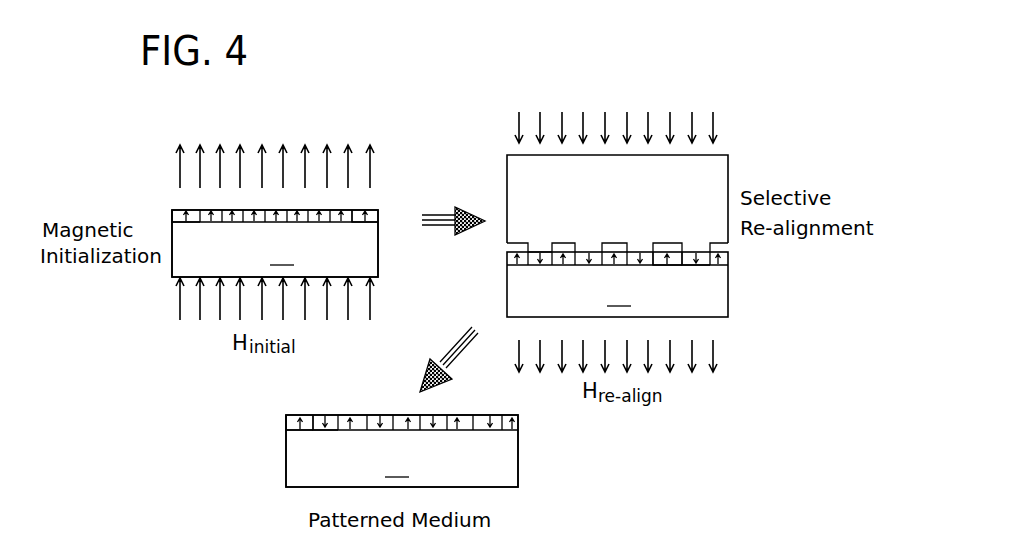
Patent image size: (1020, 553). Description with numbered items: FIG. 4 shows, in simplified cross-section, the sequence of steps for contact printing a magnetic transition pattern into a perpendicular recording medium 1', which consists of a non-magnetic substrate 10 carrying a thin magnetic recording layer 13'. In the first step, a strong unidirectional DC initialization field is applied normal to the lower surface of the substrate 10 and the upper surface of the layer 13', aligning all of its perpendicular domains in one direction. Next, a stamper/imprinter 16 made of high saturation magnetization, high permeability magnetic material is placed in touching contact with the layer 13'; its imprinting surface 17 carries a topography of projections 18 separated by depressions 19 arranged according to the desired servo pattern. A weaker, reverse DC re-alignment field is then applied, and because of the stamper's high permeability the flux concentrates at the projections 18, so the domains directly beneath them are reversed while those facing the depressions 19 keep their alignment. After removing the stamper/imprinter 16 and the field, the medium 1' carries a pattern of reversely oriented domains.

The perpendicular recording medium 1' is at (308, 359).
The non-magnetic substrate 10 is at (450, 348).
The magnetic recording layer 13' is at (490, 335).
The stamper/imprinter 16 is at (729, 170).
The imprinting surface 17 is at (507, 245).
The projections 18 is at (541, 252).
The depressions 19 is at (563, 243).